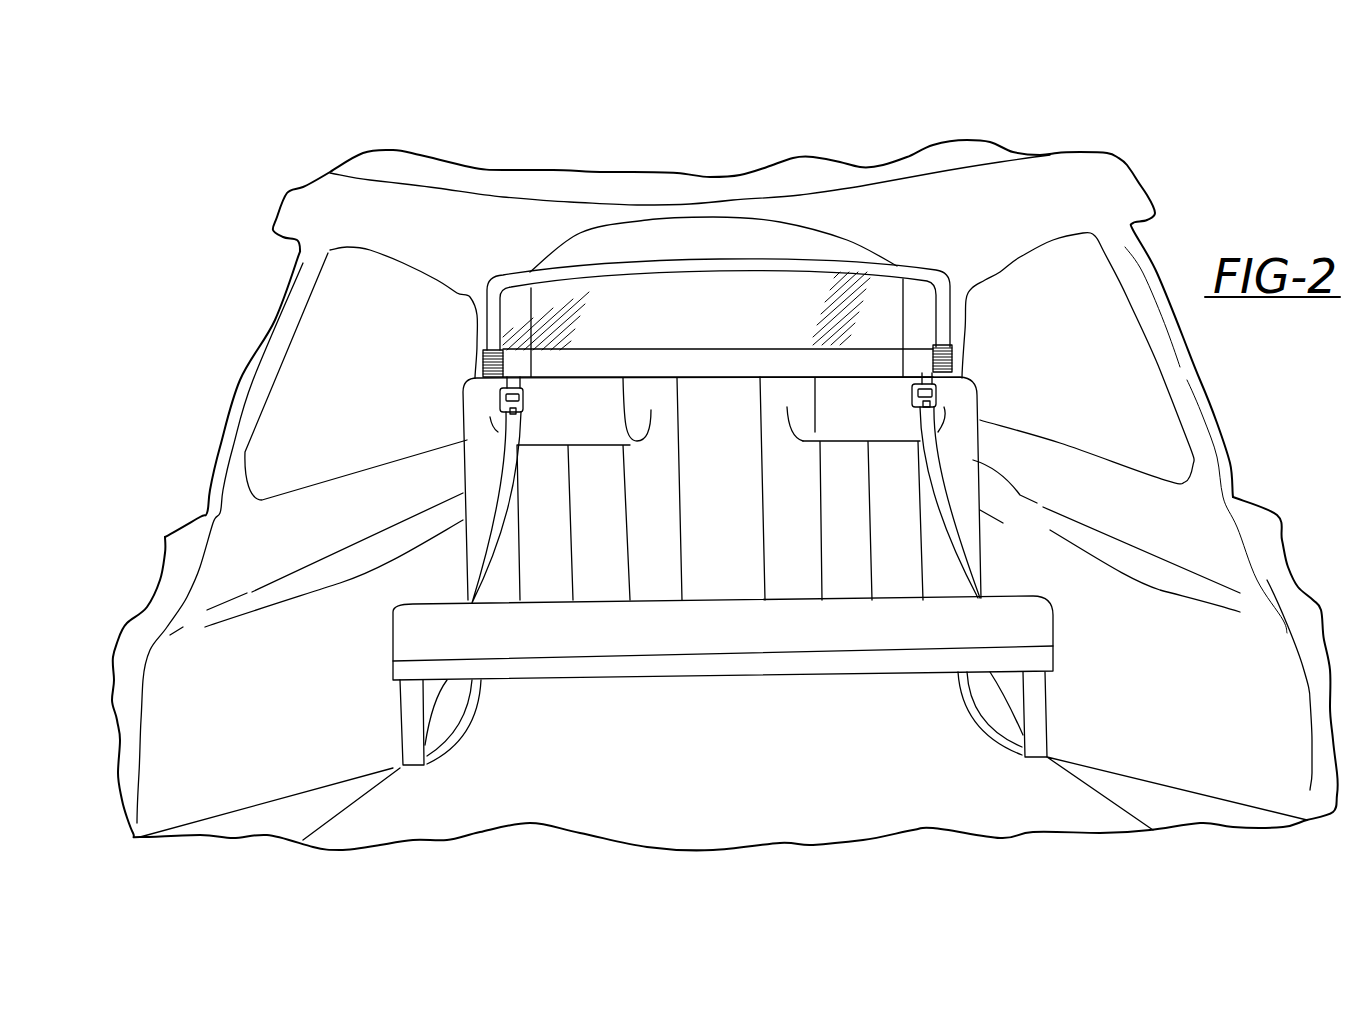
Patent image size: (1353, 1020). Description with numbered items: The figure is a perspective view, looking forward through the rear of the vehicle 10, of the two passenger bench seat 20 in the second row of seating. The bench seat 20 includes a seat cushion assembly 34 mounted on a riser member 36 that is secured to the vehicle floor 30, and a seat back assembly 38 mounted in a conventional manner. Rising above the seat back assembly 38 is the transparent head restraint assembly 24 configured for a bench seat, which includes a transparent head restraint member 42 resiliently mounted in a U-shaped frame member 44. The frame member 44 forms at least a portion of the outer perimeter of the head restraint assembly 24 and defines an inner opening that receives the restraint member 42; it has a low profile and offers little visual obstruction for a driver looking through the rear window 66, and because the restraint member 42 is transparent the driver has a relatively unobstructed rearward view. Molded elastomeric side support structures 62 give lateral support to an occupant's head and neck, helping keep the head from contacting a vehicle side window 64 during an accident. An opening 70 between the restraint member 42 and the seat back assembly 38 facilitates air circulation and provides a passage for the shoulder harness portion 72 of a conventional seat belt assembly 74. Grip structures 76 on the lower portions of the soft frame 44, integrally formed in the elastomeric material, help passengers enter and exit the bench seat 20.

The vehicle 10 is at (725, 436).
The bench seat 20 is at (1100, 613).
The transparent head restraint assembly 24 is at (723, 400).
The vehicle floor 30 is at (823, 823).
The seat cushion assembly 34 is at (817, 647).
The riser member 36 is at (1040, 717).
The seat back assembly 38 is at (977, 550).
The transparent head restraint member 42 is at (830, 283).
The frame member 44 is at (977, 288).
The side support structures 62 is at (487, 302).
The vehicle side window 64 is at (350, 389).
The rear window 66 is at (722, 247).
The opening 70 is at (722, 374).
The shoulder harness portion 72 is at (980, 463).
The seat belt assembly 74 is at (968, 390).
The grip structures 76 is at (483, 362).